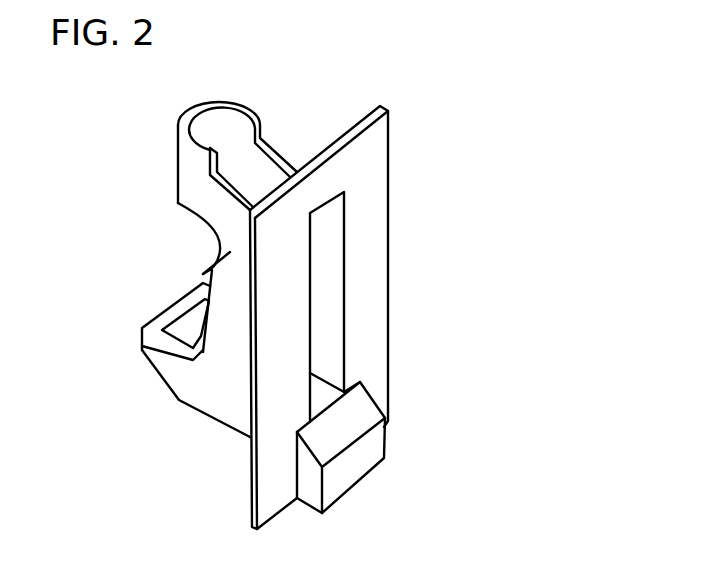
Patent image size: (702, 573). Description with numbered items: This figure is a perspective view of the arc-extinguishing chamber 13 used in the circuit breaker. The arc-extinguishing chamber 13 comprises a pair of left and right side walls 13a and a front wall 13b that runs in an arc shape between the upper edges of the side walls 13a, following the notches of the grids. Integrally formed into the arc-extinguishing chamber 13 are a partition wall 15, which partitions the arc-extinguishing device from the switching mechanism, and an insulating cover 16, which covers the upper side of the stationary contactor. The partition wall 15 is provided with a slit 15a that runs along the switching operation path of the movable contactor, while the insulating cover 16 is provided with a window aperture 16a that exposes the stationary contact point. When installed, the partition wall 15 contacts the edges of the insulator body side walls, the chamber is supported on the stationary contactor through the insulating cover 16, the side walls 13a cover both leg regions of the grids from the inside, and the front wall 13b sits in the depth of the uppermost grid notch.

The arc-extinguishing chamber 13 is at (292, 292).
The side walls 13a is at (203, 273).
The front wall 13b is at (208, 188).
The partition wall 15 is at (363, 232).
The slit 15a is at (320, 343).
The insulating cover 16 is at (333, 428).
The window aperture 16a is at (198, 330).